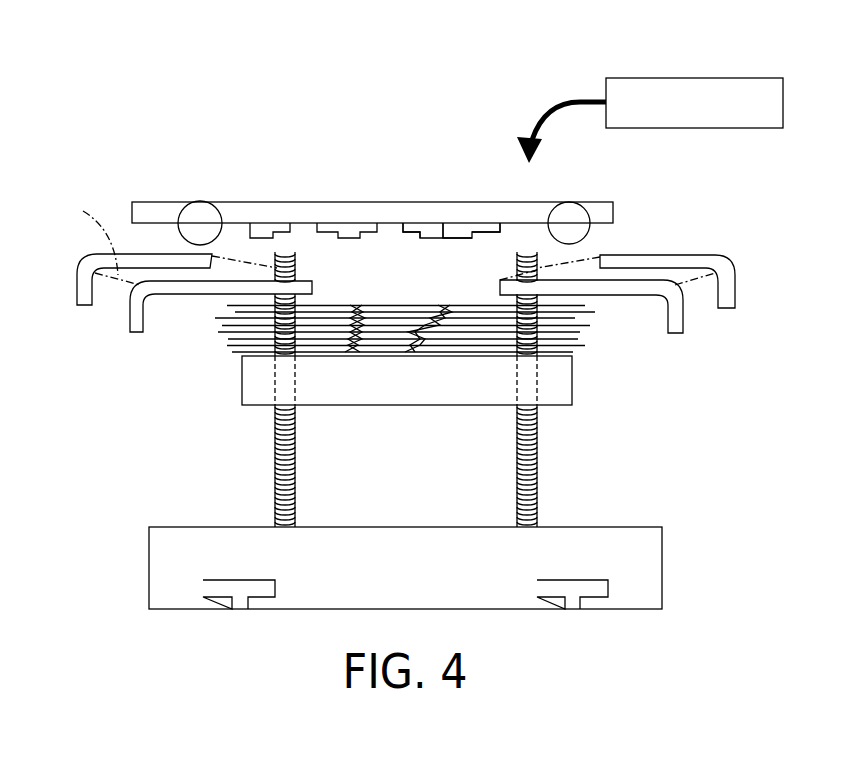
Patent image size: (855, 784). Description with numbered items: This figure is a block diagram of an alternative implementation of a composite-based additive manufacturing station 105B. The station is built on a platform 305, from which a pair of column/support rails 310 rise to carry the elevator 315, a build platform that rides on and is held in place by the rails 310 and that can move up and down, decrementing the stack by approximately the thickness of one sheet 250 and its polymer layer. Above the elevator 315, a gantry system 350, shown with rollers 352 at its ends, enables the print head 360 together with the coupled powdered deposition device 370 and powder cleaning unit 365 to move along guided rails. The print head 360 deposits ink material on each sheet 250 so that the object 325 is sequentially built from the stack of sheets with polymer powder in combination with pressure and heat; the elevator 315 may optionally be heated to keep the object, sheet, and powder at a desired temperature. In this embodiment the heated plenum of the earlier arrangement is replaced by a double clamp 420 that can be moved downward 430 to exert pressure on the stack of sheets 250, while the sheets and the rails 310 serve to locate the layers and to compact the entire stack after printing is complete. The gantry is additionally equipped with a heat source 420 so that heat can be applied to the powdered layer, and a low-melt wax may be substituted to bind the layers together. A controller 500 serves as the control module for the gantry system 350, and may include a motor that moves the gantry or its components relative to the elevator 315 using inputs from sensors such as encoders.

The composite-based additive manufacturing station 105B is at (163, 130).
The controller 500 is at (693, 78).
The gantry system 350 is at (236, 210).
The rollers 352 is at (569, 201).
The double clamp 420 is at (358, 222).
The powdered deposition device 370 is at (428, 222).
The print head 360 is at (453, 222).
The powder cleaning unit 365 is at (487, 222).
The downward direction 430 is at (79, 236).
The sheet 250 is at (323, 322).
The object 325 is at (389, 326).
The column/support rails 310 is at (275, 470).
The elevator 315 is at (416, 406).
The platform 305 is at (662, 568).